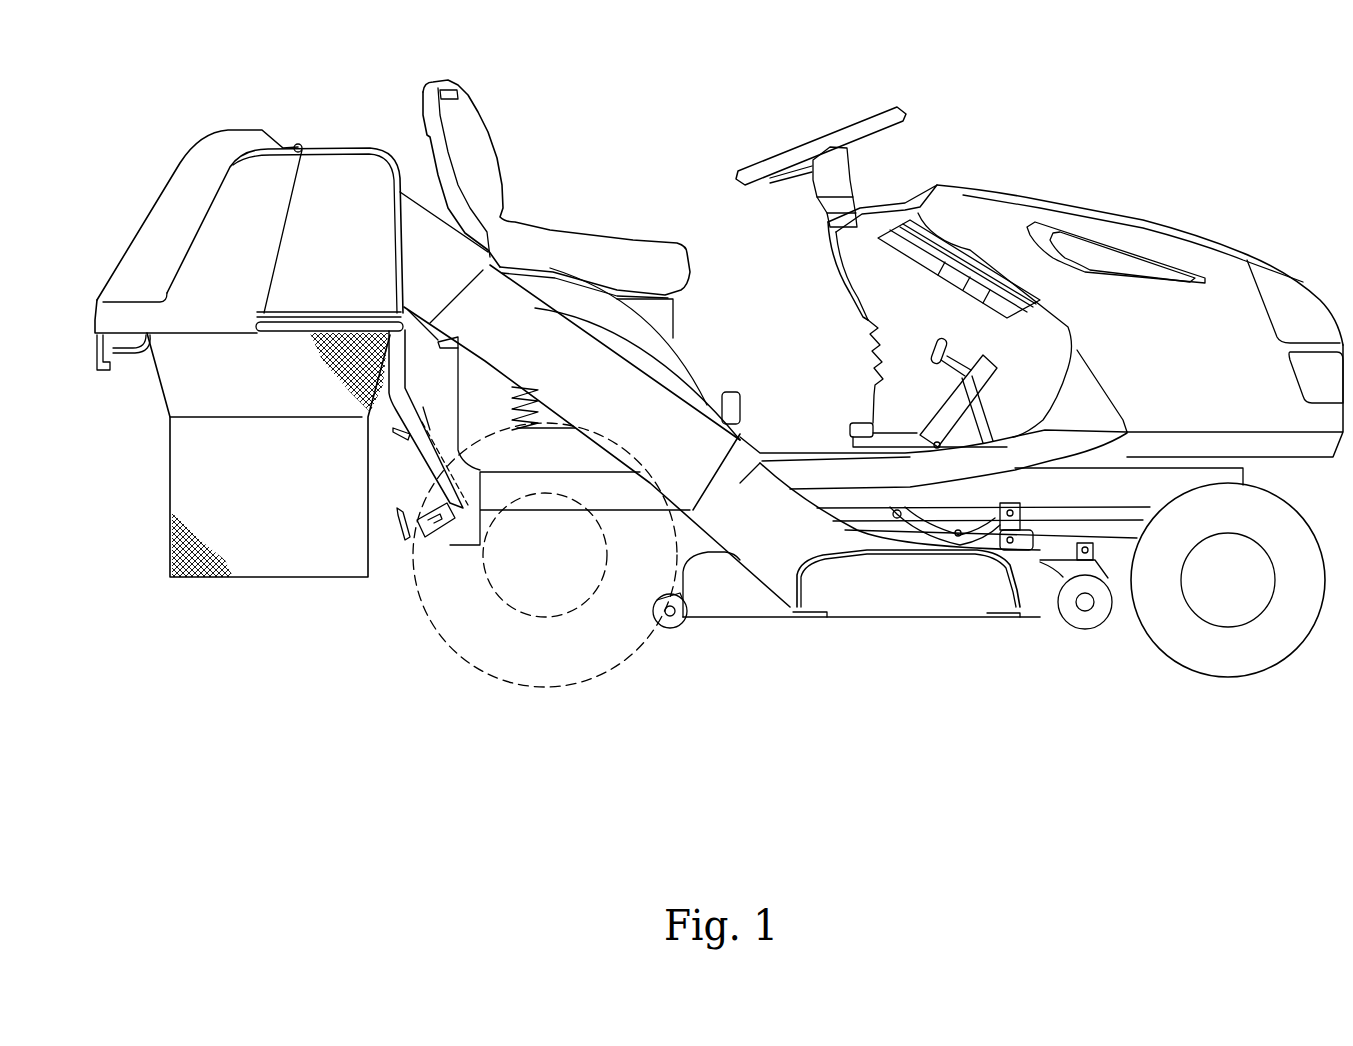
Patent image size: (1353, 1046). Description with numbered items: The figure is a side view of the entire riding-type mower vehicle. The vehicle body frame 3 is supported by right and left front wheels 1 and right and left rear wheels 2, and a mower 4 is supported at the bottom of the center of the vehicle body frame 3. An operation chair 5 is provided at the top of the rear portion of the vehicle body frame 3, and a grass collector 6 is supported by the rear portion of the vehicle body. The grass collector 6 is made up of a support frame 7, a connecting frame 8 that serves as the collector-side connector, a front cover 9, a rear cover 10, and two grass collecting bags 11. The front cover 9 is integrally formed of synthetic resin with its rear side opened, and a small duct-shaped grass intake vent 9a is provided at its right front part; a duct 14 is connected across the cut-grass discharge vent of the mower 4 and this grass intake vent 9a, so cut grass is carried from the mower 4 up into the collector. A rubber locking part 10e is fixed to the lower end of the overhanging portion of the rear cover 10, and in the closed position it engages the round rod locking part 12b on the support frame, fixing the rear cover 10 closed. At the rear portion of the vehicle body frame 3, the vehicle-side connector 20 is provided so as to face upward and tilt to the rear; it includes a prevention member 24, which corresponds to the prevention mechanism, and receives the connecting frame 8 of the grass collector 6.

The front wheel 1 is at (1227, 660).
The rear wheel 2 is at (548, 690).
The vehicle body frame 3 is at (547, 520).
The mower 4 is at (737, 605).
The operation chair 5 is at (497, 152).
The grass collector 6 is at (157, 119).
The support frame 7 is at (328, 312).
The connecting frame 8 is at (397, 368).
The front cover 9 is at (345, 163).
The grass intake vent 9a is at (463, 250).
The rear cover 10 is at (168, 217).
The locking part 10e is at (97, 372).
The grass bag 11 is at (272, 573).
The locking part 12b is at (127, 355).
The duct 14 is at (665, 473).
The vehicle-side connector 20 is at (420, 460).
The prevention member 24 is at (395, 528).